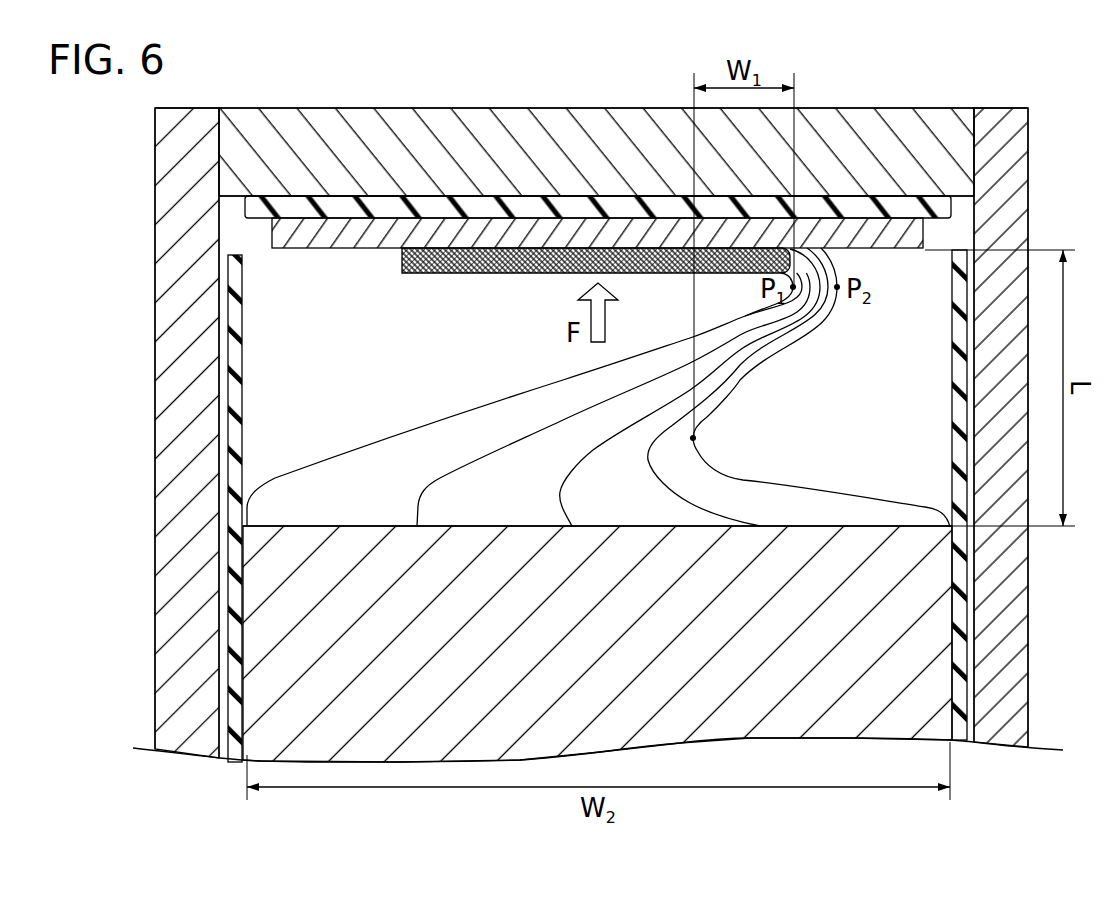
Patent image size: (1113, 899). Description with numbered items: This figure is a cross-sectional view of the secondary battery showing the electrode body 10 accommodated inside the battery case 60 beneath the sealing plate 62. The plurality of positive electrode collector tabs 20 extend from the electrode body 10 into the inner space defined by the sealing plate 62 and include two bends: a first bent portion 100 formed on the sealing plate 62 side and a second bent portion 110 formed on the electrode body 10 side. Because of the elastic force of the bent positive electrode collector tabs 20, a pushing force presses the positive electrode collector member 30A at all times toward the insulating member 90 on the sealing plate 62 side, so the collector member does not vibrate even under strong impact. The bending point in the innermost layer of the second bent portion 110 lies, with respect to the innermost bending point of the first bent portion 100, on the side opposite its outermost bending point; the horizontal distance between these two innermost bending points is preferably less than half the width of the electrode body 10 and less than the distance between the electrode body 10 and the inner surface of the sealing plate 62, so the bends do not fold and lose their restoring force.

The electrode body 10 is at (933, 628).
The positive electrode collector tabs 20 is at (468, 413).
The positive electrode collector member 30A is at (873, 240).
The battery case 60 is at (173, 388).
The sealing plate 62 is at (459, 118).
The insulating member 90 is at (540, 197).
The first bent portion 100 is at (849, 310).
The second bent portion 110 is at (742, 431).